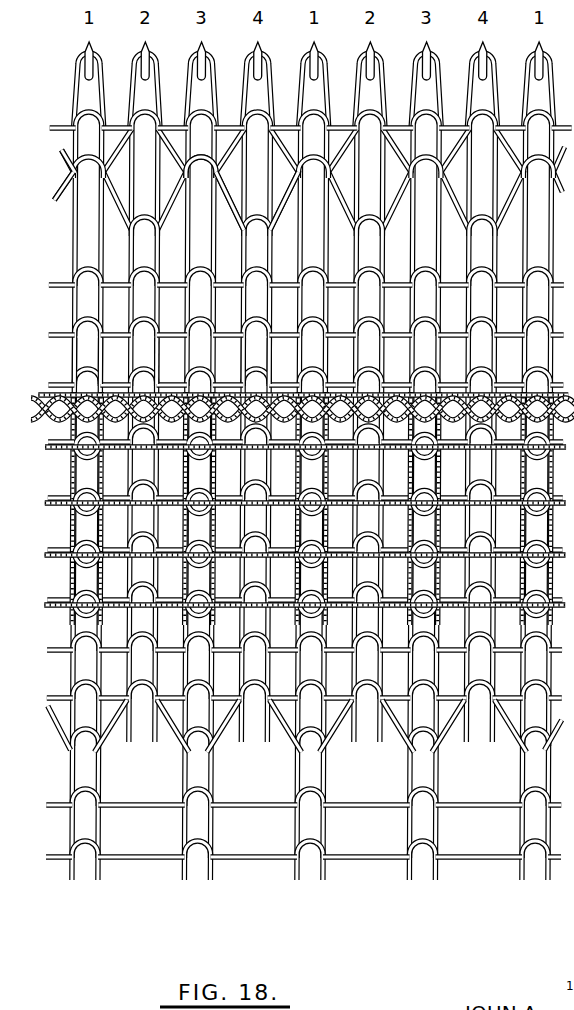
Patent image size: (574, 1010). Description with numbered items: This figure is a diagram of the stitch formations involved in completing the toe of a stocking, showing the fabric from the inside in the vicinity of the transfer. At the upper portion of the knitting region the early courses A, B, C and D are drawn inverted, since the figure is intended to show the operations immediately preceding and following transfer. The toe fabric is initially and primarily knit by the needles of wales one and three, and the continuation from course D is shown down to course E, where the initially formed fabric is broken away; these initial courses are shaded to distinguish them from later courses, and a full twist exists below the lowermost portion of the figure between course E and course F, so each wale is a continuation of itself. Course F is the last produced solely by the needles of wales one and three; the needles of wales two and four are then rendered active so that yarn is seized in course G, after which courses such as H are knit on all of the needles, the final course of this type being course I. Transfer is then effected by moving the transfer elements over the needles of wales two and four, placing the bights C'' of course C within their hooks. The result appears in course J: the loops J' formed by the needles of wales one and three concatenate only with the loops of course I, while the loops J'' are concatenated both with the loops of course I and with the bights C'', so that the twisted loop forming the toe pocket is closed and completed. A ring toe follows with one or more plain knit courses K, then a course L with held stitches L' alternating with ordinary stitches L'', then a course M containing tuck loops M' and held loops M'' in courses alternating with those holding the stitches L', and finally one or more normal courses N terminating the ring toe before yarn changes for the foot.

The normal course N is at (66, 125).
The tuck loops M' is at (58, 154).
The held loops M'' is at (199, 157).
The course M is at (51, 188).
The held stitches L' is at (270, 215).
The ordinary stitches L'' is at (227, 219).
The course L is at (298, 273).
The plain knit course K is at (64, 333).
The loops J′ J' is at (132, 358).
The course J is at (298, 378).
The loops J″ J'' is at (191, 361).
The bights C'' is at (164, 361).
The course C is at (290, 395).
The course B is at (48, 405).
The course A is at (54, 413).
The final course I is at (53, 441).
The course D is at (54, 450).
The course E is at (54, 604).
The course H is at (53, 699).
The course G is at (55, 721).
The course F is at (50, 805).